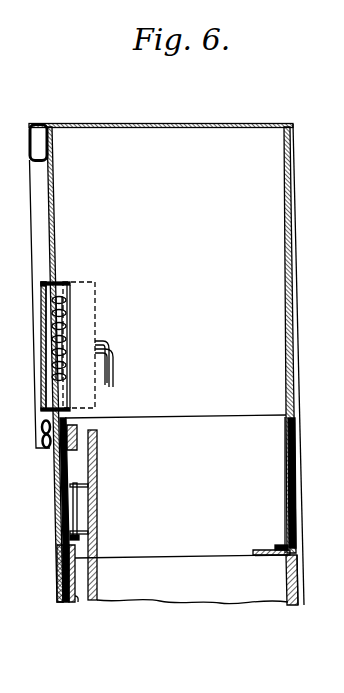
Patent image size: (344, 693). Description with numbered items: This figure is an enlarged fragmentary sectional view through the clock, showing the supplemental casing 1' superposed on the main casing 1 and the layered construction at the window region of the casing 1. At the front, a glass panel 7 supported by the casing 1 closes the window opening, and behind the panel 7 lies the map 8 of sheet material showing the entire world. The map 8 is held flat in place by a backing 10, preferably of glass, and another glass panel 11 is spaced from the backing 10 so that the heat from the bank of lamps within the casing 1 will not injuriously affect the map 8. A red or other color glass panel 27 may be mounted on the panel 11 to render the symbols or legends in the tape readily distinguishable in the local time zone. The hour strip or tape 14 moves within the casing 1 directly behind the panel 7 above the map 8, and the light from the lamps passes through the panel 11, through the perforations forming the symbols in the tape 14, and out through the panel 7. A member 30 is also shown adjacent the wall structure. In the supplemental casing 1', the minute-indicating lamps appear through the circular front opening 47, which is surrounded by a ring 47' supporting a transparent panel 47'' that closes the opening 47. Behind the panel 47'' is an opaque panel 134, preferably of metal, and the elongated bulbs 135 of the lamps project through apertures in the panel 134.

The supplemental casing 1' is at (166, 345).
The casing 1 is at (40, 481).
The glass panel 7 is at (57, 578).
The map 8 is at (64, 603).
The backing 10 is at (78, 601).
The glass panel 11 is at (98, 476).
The hour strip or tape 14 is at (297, 500).
The color glass panel 27 is at (78, 508).
The shelf 30 is at (286, 493).
The front opening 47 is at (36, 345).
The ring 47' is at (27, 272).
The transparent panel 47'' is at (24, 347).
The opaque panel 134 is at (60, 297).
The elongated bulbs 135 is at (64, 333).